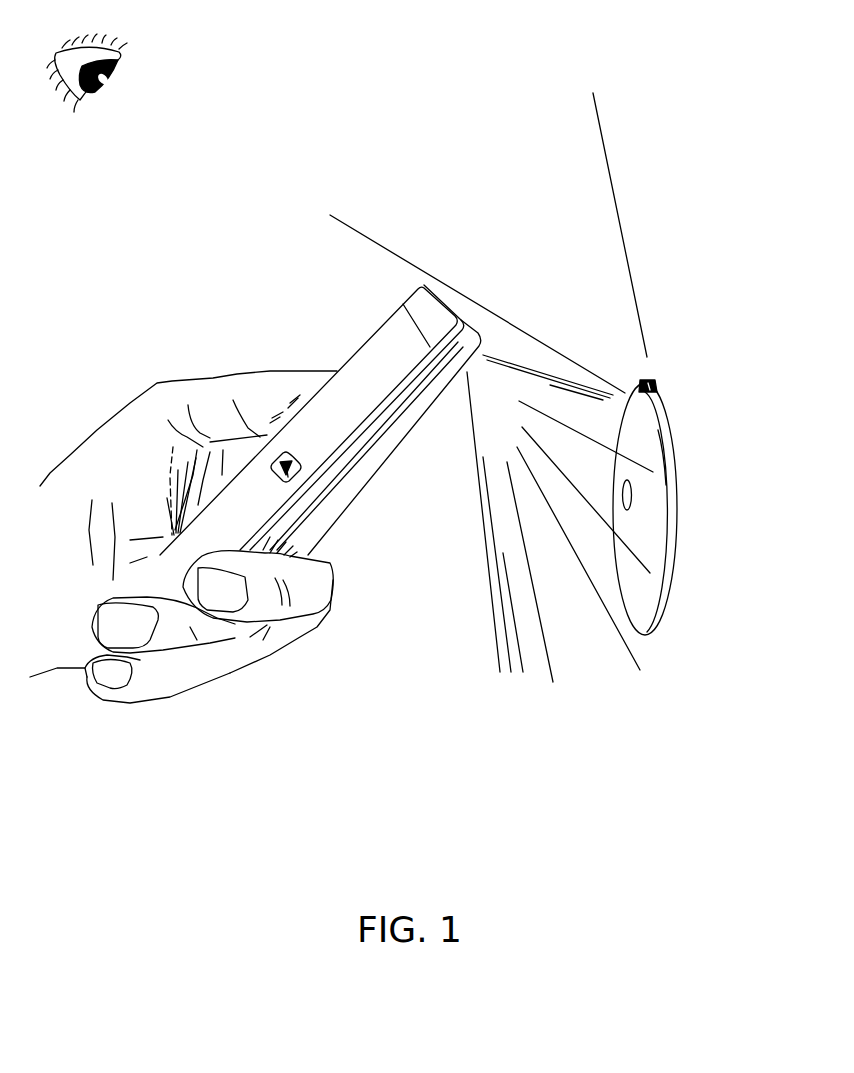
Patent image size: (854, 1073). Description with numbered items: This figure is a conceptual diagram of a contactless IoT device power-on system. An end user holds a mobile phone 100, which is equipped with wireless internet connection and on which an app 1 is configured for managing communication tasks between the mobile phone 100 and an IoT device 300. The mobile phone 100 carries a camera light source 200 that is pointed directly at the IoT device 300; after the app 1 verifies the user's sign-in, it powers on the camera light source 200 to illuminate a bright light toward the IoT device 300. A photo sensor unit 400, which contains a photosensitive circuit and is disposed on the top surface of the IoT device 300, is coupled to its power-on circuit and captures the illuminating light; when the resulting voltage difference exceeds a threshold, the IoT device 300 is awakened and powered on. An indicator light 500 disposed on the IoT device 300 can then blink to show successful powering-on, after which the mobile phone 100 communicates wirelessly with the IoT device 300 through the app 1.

The mobile phone 100 is at (372, 337).
The app 1 is at (302, 460).
The camera light source 200 is at (458, 362).
The IoT device 300 is at (673, 432).
The photo sensor unit 400 is at (632, 495).
The indicator light 500 is at (657, 386).